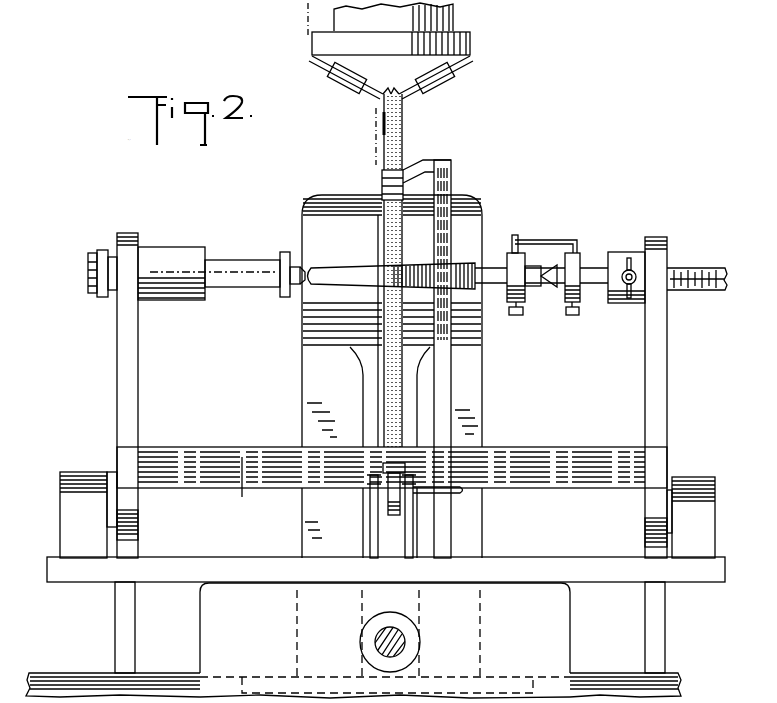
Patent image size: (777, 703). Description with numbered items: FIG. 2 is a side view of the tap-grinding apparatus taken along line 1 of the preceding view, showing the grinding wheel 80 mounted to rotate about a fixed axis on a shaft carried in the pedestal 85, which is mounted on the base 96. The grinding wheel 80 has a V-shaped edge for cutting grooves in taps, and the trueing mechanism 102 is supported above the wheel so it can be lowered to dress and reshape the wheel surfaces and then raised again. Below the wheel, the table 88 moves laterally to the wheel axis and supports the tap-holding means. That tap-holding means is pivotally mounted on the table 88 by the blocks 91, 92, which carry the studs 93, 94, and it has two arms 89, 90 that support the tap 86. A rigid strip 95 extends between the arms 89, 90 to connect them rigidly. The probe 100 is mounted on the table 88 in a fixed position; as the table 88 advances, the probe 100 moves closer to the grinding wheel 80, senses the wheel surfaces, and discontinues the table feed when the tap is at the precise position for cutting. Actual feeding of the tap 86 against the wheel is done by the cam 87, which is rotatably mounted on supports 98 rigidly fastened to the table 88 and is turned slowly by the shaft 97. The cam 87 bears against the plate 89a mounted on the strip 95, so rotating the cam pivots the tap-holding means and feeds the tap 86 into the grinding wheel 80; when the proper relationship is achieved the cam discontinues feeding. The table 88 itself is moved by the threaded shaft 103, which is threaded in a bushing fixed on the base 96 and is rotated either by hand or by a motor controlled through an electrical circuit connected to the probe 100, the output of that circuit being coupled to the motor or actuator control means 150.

The viewing direction arrow 1 is at (297, 19).
The grinding wheel 80 is at (384, 137).
The pedestal 85 is at (322, 203).
The tap 86 is at (327, 276).
The cam 87 is at (398, 515).
The table 88 is at (167, 573).
The arm 89 is at (130, 363).
The plate 89a is at (380, 466).
The arm 90 is at (660, 372).
The block 91 is at (73, 520).
The block 92 is at (708, 518).
The stud 93 is at (112, 488).
The stud 94 is at (668, 500).
The rigid strip 95 is at (592, 428).
The base 96 is at (122, 693).
The shaft 97 is at (455, 496).
The supports 98 is at (413, 541).
The probe 100 is at (384, 190).
The trueing mechanism 102 is at (466, 37).
The threaded shaft 103 is at (400, 641).
The motor or actuator control means 150 is at (480, 688).